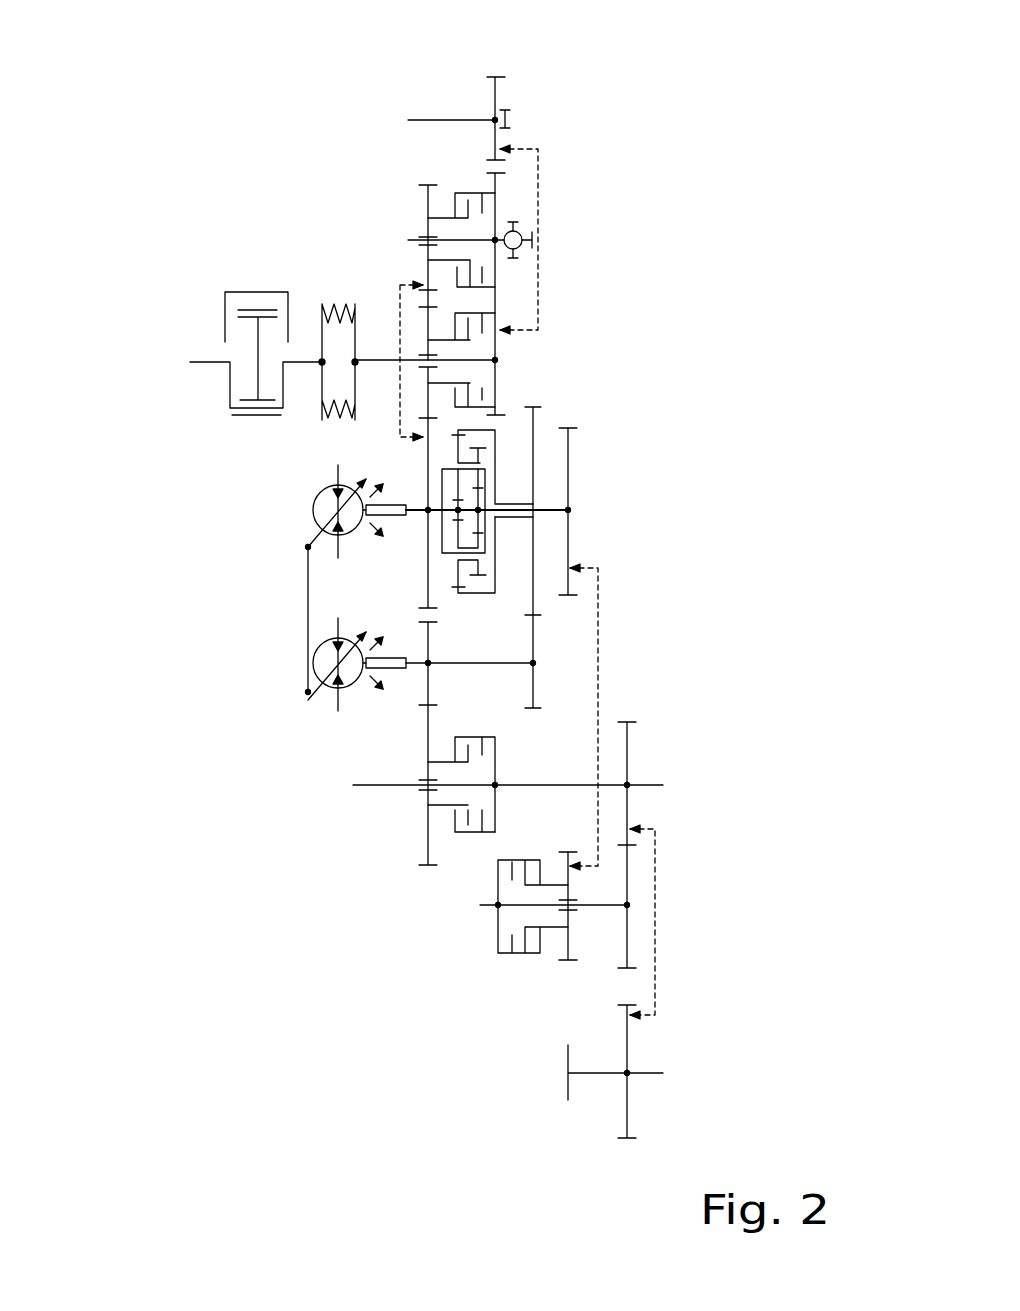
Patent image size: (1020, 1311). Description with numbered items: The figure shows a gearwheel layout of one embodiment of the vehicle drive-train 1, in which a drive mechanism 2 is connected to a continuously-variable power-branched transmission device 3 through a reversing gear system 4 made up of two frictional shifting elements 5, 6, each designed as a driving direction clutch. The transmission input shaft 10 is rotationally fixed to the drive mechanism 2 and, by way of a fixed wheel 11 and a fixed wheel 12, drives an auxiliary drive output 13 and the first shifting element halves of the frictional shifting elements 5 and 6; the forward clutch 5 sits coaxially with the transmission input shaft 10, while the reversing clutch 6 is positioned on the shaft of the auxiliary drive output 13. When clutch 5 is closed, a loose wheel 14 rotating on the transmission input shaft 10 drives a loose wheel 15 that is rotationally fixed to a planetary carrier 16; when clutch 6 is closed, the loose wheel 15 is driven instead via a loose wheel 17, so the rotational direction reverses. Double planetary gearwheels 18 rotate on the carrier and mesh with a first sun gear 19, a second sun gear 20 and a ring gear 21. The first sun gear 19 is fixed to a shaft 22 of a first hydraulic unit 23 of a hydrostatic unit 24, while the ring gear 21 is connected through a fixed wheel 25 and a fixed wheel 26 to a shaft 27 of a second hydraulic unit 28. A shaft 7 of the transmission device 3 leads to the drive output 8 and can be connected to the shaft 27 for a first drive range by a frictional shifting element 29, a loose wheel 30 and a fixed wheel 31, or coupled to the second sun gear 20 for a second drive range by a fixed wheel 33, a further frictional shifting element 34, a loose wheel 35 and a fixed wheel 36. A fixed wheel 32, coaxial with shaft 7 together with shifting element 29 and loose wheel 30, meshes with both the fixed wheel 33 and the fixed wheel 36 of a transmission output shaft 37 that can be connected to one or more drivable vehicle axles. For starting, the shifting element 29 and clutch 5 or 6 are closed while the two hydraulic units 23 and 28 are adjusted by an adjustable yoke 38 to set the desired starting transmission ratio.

The vehicle drive-train 1 is at (650, 128).
The drive mechanism 2 is at (237, 292).
The transmission device 3 is at (632, 577).
The reversing gear system 4 is at (357, 225).
The frictional shifting element 5 is at (467, 312).
The frictional shifting element 6 is at (465, 193).
The shaft 7 is at (653, 787).
The drive output 8 is at (517, 1047).
The transmission input shaft 10 is at (378, 360).
The fixed wheel 11 is at (498, 352).
The fixed wheel 12 is at (498, 207).
The auxiliary drive output 13 is at (425, 237).
The loose wheel 14 is at (428, 322).
The loose wheel 15 is at (425, 588).
The planetary carrier 16 is at (480, 550).
The loose wheel 17 is at (415, 233).
The double planetary gearwheels 18 is at (480, 540).
The first sun gear 19 is at (442, 497).
The second sun gear 20 is at (480, 497).
The ring gear 21 is at (495, 428).
The shaft 22 is at (418, 516).
The first hydraulic unit 23 is at (314, 507).
The hydrostatic unit 24 is at (278, 573).
The fixed wheel 25 is at (540, 427).
The fixed wheel 26 is at (537, 642).
The shaft 27 is at (535, 665).
The second hydraulic unit 28 is at (322, 692).
The frictional shifting element 29 is at (463, 837).
The loose wheel 30 is at (425, 827).
The fixed wheel 31 is at (427, 683).
The fixed wheel 32 is at (630, 740).
The fixed wheel 33 is at (630, 867).
The frictional shifting element 34 is at (503, 952).
The loose wheel 35 is at (573, 950).
The fixed wheel 36 is at (630, 1108).
The transmission output shaft 37 is at (657, 1072).
The adjustable yoke 38 is at (307, 623).